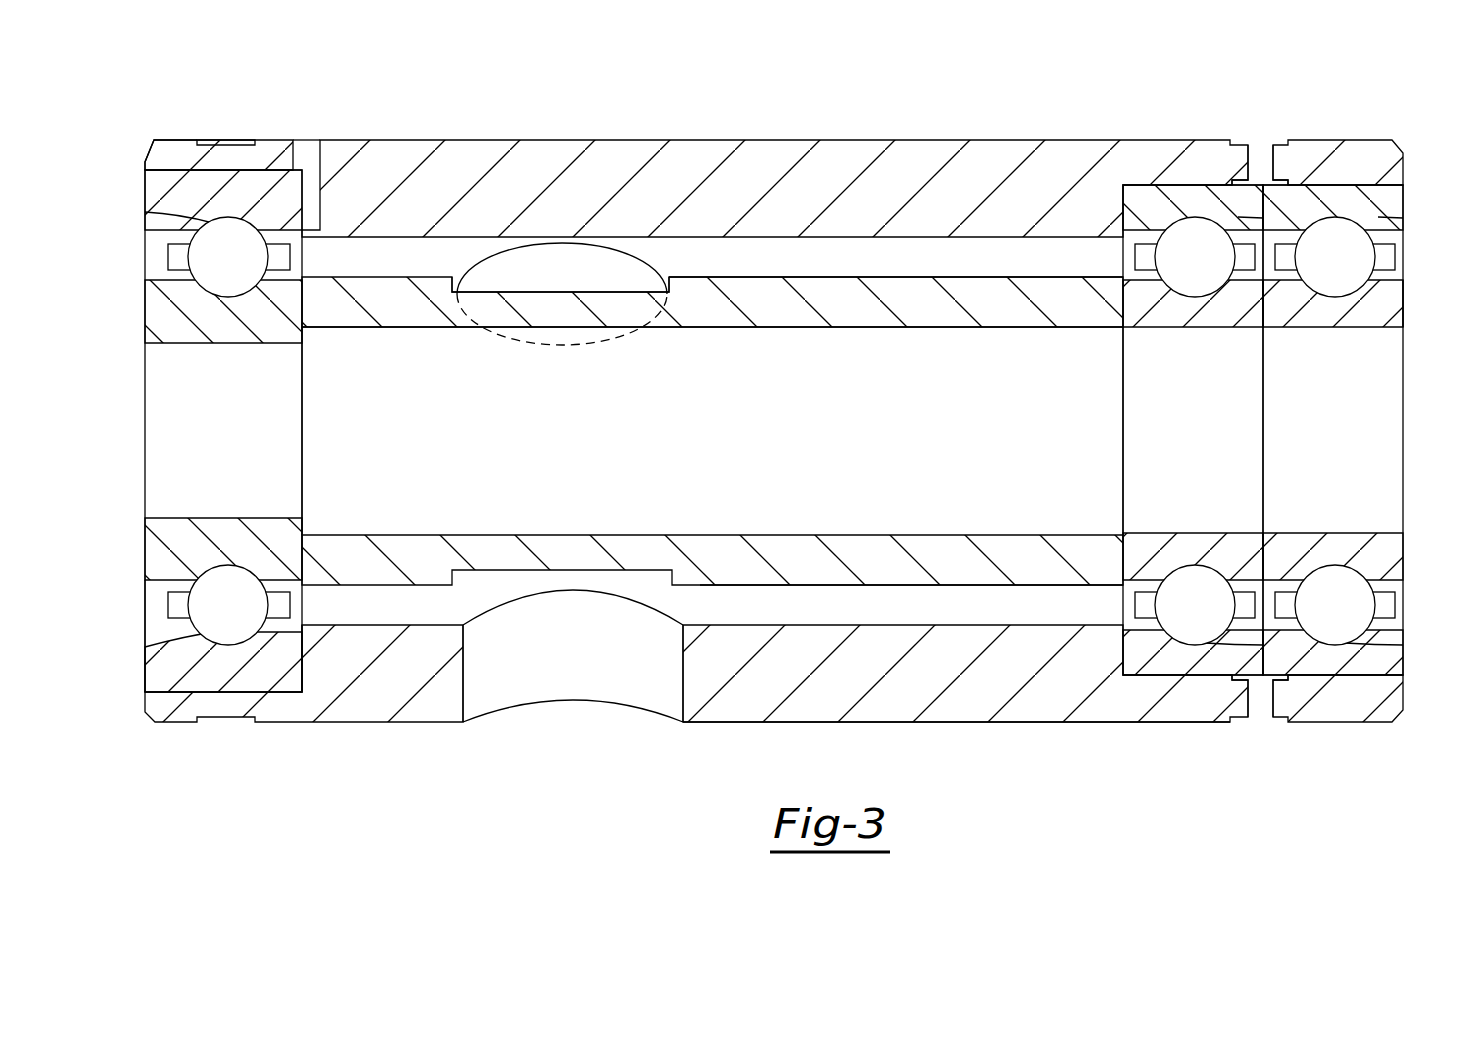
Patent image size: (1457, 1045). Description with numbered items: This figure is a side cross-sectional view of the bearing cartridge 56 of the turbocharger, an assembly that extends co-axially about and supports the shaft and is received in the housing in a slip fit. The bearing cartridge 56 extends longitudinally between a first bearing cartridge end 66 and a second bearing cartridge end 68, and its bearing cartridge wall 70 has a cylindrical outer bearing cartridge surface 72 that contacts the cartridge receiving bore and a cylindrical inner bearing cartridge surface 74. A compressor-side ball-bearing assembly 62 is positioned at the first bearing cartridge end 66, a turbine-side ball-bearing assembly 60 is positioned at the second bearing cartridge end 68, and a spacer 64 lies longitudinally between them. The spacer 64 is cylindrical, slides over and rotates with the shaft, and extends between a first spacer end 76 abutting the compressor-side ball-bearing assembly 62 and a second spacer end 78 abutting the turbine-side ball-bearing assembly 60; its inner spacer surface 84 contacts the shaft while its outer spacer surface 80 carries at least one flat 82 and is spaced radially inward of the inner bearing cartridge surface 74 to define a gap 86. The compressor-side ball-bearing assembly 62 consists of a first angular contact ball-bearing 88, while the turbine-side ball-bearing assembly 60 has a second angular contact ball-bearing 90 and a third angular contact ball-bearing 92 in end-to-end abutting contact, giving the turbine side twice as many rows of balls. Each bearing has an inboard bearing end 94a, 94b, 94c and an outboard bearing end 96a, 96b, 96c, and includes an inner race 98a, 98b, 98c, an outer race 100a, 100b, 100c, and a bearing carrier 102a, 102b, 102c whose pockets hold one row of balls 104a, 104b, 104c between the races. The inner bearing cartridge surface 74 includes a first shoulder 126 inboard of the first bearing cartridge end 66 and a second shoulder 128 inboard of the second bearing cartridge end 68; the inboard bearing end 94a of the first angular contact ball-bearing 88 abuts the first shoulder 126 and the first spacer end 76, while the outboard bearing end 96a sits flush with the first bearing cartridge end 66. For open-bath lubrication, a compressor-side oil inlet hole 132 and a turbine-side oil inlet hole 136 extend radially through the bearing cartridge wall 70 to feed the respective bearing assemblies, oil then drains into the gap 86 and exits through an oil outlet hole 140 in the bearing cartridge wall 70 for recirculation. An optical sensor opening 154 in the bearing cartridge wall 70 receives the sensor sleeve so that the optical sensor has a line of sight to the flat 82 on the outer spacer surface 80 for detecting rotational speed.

The bearing cartridge 56 is at (938, 76).
The turbine-side ball-bearing assembly 60 is at (1258, 686).
The compressor-side ball-bearing assembly 62 is at (223, 697).
The spacer 64 is at (911, 314).
The first bearing cartridge end 66 is at (148, 162).
The second bearing cartridge end 68 is at (1405, 164).
The bearing cartridge wall 70 is at (895, 695).
The outer bearing cartridge surface 72 is at (730, 727).
The inner bearing cartridge surface 74 is at (820, 619).
The first spacer end 76 is at (319, 339).
The second spacer end 78 is at (1109, 340).
The outer spacer surface 80 is at (736, 274).
The flat 82 is at (533, 288).
The inner spacer surface 84 is at (783, 330).
The gap 86 is at (905, 605).
The first angular contact ball-bearing 88 is at (246, 423).
The second angular contact ball-bearing 90 is at (1153, 428).
The third angular contact ball-bearing 92 is at (1317, 425).
The inboard bearing end 94a is at (307, 666).
The inboard bearing end 94b is at (1110, 645).
The inboard bearing end 94c is at (1256, 658).
The outboard bearing end 96a is at (143, 668).
The outboard bearing end 96b is at (1266, 310).
The outboard bearing end 96c is at (1406, 316).
The inner race 98a is at (174, 333).
The inner race 98b is at (1175, 317).
The inner race 98c is at (1368, 317).
The outer race 100a is at (235, 190).
The outer race 100b is at (1163, 197).
The outer race 100c is at (1352, 197).
The bearing carrier 102a is at (181, 602).
The bearing carrier 102b is at (1144, 600).
The bearing carrier 102c is at (1285, 598).
The balls 104a is at (227, 580).
The balls 104b is at (1211, 582).
The balls 104c is at (1350, 586).
The first shoulder 126 is at (298, 656).
The second shoulder 128 is at (1175, 682).
The compressor-side oil inlet hole 132 is at (304, 153).
The turbine-side oil inlet hole 136 is at (1259, 152).
The oil outlet hole 140 is at (565, 672).
The optical sensor opening 154 is at (590, 268).